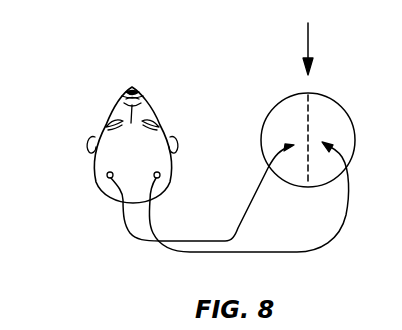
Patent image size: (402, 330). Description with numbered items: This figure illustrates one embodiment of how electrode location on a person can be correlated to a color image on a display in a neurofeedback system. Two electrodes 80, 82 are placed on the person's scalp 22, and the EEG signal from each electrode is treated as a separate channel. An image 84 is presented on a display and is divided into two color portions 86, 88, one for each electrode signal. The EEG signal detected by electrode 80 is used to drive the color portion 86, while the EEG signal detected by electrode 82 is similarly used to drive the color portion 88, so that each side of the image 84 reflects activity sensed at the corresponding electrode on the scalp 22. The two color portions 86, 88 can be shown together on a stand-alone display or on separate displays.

The scalp 22 is at (81, 104).
The electrode 80 is at (107, 177).
The electrode 82 is at (161, 178).
The image 84 is at (308, 53).
The color portion 86 is at (270, 127).
The color portion 88 is at (338, 114).